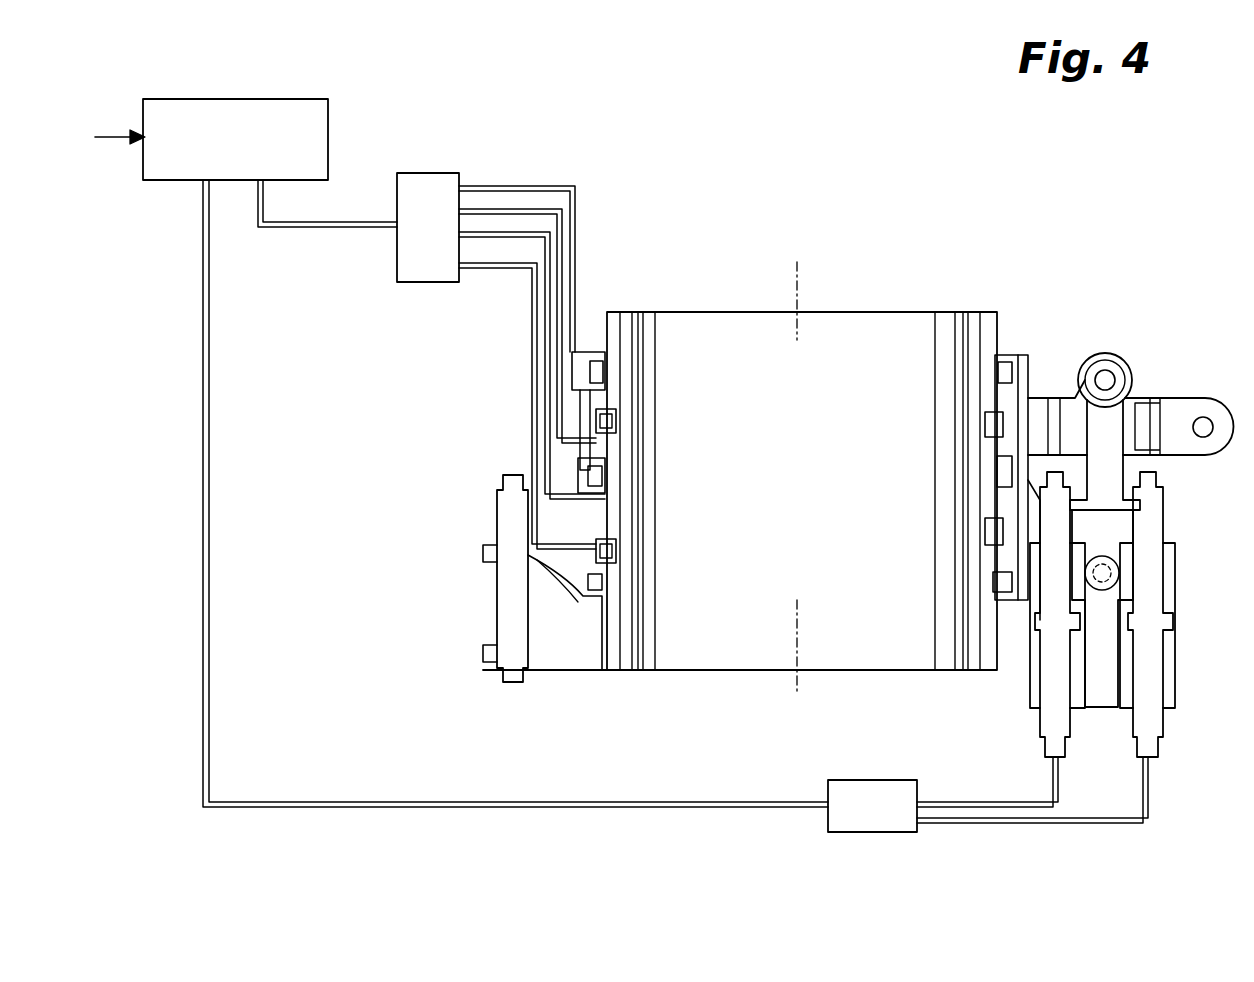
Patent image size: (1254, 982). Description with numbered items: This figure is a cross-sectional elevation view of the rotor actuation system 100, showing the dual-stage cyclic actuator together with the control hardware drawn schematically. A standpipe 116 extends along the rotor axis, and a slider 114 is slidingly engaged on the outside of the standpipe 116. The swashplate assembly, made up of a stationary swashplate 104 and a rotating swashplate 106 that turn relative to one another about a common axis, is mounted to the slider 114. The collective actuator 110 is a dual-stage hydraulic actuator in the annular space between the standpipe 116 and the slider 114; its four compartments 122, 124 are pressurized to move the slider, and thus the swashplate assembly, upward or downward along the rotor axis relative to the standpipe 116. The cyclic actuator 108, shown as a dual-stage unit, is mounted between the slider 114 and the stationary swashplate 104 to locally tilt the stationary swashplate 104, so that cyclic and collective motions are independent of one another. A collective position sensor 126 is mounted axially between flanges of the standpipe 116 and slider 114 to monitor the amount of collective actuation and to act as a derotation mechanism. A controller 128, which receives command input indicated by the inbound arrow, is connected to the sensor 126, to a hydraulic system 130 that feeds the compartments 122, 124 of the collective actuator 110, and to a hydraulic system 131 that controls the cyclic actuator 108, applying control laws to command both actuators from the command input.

The rotor actuation system 100 is at (1012, 250).
The stationary swashplate 104 is at (1040, 398).
The rotating swashplate 106 is at (1192, 400).
The cyclic actuator 108 is at (1175, 660).
The collective actuator 110 is at (601, 307).
The slider 114 is at (578, 350).
The standpipe 116 is at (886, 312).
The compartments 122 is at (606, 400).
The compartments 124 is at (606, 455).
The collective position sensor 126 is at (489, 612).
The controller 128 is at (333, 118).
The hydraulic system 130 is at (441, 174).
The hydraulic system 131 is at (868, 780).